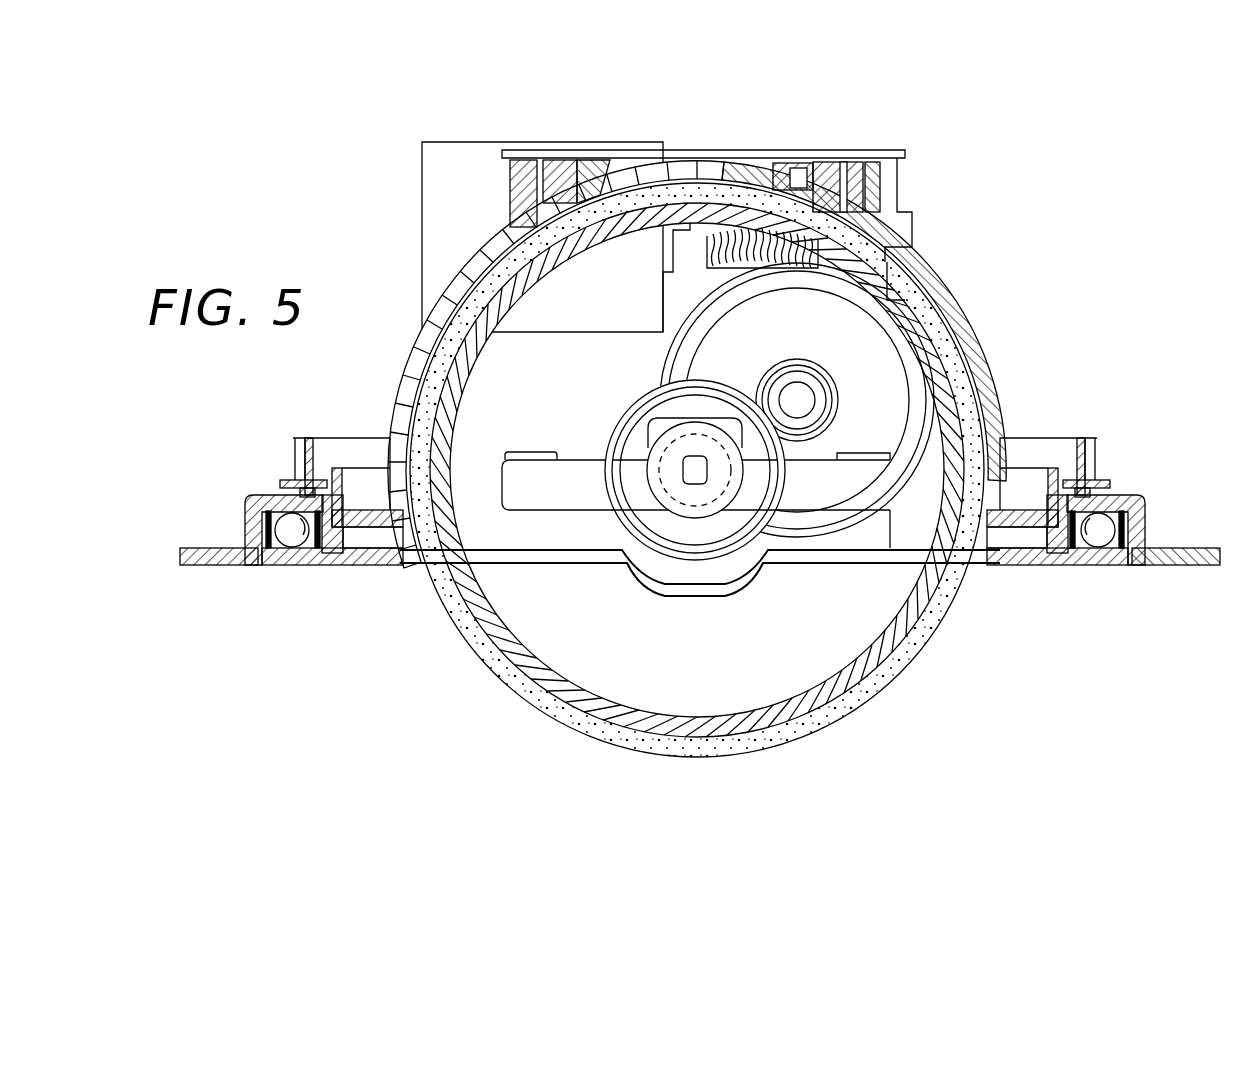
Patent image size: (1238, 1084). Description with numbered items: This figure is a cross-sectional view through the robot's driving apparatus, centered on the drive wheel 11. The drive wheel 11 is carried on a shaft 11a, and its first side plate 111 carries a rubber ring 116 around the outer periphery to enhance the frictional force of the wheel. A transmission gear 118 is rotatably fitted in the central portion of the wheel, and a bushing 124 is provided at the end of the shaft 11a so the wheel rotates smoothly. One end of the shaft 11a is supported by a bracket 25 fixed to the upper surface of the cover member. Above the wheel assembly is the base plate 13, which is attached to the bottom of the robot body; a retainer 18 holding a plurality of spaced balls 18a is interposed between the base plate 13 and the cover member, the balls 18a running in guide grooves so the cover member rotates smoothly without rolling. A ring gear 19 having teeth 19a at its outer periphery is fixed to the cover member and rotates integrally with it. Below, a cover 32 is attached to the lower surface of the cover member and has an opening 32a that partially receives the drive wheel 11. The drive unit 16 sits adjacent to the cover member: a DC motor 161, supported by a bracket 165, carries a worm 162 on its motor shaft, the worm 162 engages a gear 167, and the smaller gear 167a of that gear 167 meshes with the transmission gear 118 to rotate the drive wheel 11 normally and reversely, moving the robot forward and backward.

The drive wheel 11 is at (736, 772).
The shaft 11a is at (697, 482).
The first side plate 111 is at (822, 702).
The rubber ring 116 is at (892, 658).
The transmission gear 118 is at (665, 565).
The bushing 124 is at (640, 508).
The bracket 25 is at (533, 488).
The base plate 13 is at (200, 567).
The retainer 18 is at (290, 545).
The balls 18a is at (317, 550).
The ring gear 19 is at (1072, 440).
The teeth 19a is at (1110, 478).
The cover 32 is at (1022, 582).
The opening 32a is at (432, 582).
The drive unit 16 is at (797, 140).
The DC motor 161 is at (462, 172).
The worm 162 is at (723, 240).
The bracket 165 is at (858, 170).
The gear 167 is at (935, 438).
The smaller gear 167a is at (840, 366).